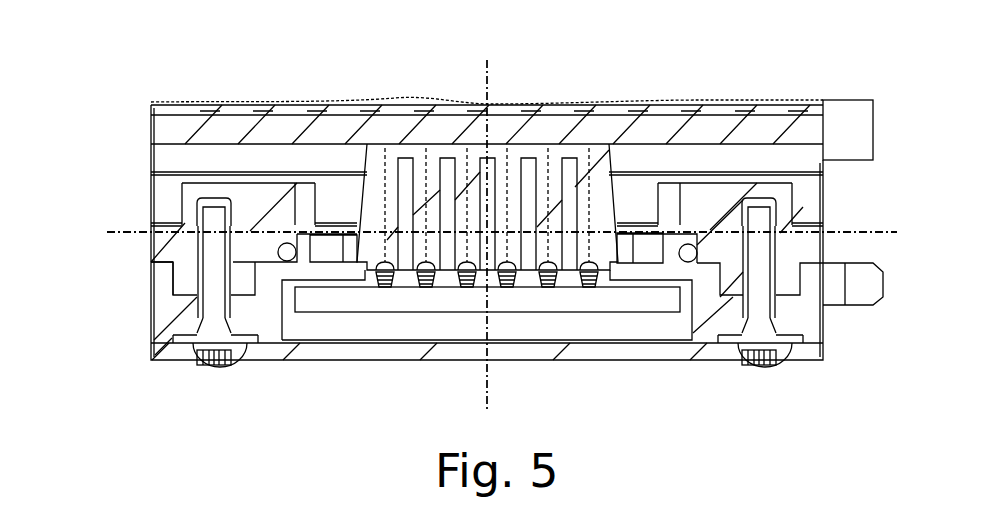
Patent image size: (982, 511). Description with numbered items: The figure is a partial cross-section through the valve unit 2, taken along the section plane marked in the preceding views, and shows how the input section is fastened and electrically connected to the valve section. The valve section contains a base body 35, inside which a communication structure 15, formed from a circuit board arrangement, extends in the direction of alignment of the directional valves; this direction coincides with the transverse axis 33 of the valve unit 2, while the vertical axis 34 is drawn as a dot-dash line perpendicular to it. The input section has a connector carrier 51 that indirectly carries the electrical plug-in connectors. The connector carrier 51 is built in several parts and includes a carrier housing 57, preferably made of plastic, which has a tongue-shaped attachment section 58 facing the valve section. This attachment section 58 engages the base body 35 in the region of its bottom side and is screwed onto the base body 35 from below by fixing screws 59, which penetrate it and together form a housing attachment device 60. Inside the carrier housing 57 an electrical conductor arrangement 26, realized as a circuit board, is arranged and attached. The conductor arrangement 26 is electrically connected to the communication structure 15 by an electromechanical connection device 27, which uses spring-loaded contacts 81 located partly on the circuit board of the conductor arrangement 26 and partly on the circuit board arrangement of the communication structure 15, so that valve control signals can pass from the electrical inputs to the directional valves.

The valve unit 2 is at (683, 102).
The communication structure 15 is at (378, 128).
The vertical axis 34 is at (490, 82).
The transverse axis 33 is at (108, 234).
The base body 35 is at (187, 188).
The connector carrier 51 is at (162, 317).
The housing attachment device 60 is at (193, 285).
The fixing screws 59 is at (212, 345).
The electromechanical connection device 27 is at (453, 259).
The spring-loaded contacts 81 is at (547, 285).
The carrier housing 57 is at (706, 344).
The electrical conductor arrangement 26 is at (325, 299).
The attachment section 58 is at (814, 317).